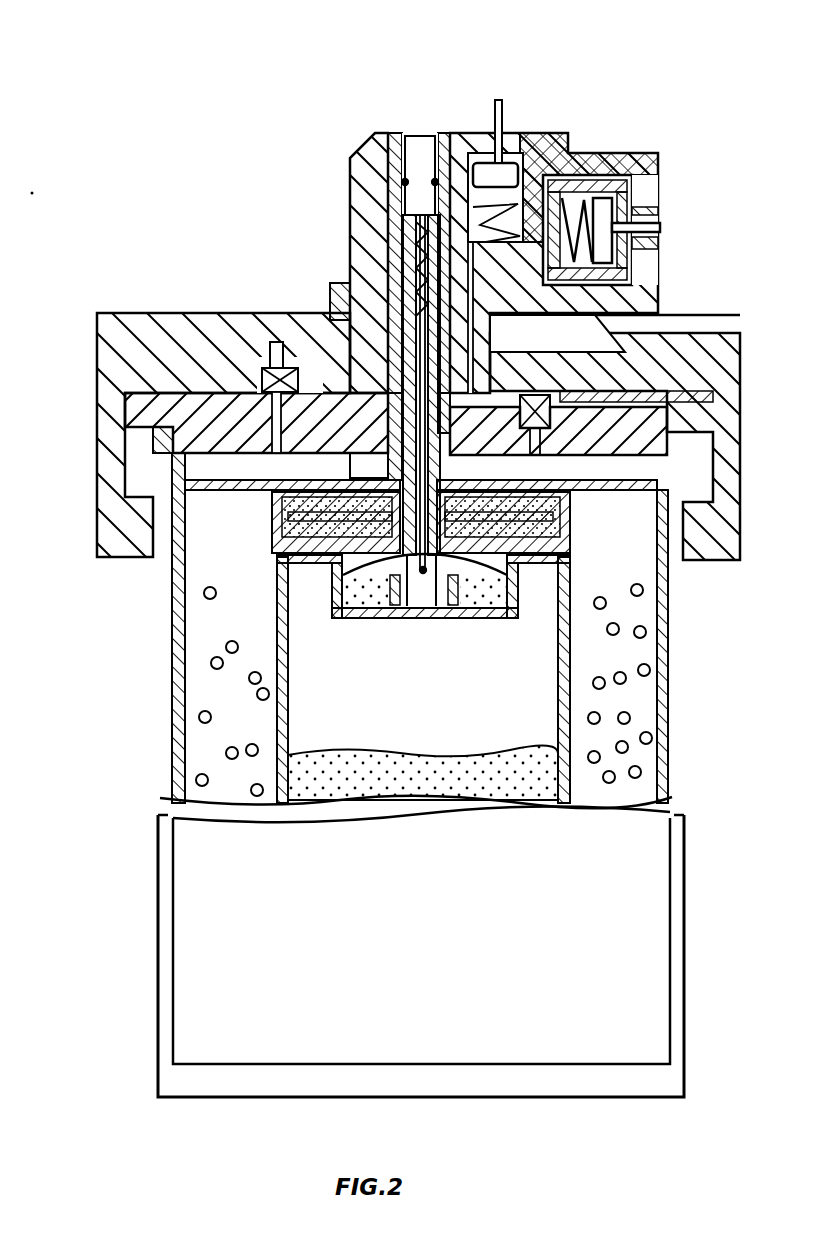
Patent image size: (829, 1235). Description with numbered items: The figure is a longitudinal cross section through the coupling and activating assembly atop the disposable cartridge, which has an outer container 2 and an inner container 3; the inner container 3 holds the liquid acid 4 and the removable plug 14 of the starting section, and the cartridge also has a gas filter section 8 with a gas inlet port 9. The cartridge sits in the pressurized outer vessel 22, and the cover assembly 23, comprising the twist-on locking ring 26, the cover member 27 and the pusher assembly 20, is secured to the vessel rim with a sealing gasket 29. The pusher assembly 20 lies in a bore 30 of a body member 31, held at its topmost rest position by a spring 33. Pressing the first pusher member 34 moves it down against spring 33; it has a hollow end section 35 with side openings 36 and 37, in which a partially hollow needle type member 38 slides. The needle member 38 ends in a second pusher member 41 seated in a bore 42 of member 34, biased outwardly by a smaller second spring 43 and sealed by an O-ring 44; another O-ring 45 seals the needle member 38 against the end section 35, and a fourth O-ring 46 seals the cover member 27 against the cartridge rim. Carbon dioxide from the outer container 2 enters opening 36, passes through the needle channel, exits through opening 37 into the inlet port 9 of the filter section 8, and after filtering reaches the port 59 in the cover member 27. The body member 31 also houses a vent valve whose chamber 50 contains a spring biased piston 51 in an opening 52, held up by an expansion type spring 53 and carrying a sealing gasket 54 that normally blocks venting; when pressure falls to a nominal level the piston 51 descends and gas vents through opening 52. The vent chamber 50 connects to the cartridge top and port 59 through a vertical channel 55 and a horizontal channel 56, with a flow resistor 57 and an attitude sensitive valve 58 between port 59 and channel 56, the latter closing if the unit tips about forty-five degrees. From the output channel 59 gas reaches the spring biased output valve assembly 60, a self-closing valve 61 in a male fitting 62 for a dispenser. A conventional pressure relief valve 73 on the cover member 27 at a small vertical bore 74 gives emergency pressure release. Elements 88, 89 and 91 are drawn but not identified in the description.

The outer container 2 is at (640, 712).
The inner container 3 is at (283, 697).
The liquid acid 4 is at (445, 752).
The gas filter section 8 is at (424, 573).
The gas inlet port 9 is at (380, 500).
The removable plug 14 is at (372, 612).
The pusher assembly 20 is at (424, 115).
The pressurized outer vessel 22 is at (686, 940).
The cover assembly 23 is at (183, 285).
The twist-on locking ring 26 is at (730, 435).
The cover member 27 is at (190, 418).
The sealing gasket 29 is at (158, 328).
The bore 30 is at (470, 480).
The body member 31 is at (350, 298).
The spring 33 is at (275, 492).
The first pusher member 34 is at (372, 165).
The hollow end section 35 is at (520, 590).
The side opening 36 is at (414, 612).
The side opening 37 is at (280, 590).
The needle type member 38 is at (470, 600).
The second pusher member 41 is at (392, 167).
The bore 42 is at (405, 300).
The second spring 43 is at (403, 240).
The O-ring 44 is at (462, 133).
The O-ring 45 is at (340, 600).
The fourth O-ring 46 is at (345, 520).
The vent valve chamber 50 is at (602, 160).
The piston 51 is at (520, 180).
The opening 52 is at (515, 166).
The expansion type spring 53 is at (590, 162).
The sealing gasket 54 is at (512, 215).
The vertical channel 55 is at (473, 347).
The horizontal channel 56 is at (505, 393).
The flow resistor 57 is at (560, 427).
The attitude sensitive valve 58 is at (560, 457).
The port 59 is at (533, 227).
The output valve assembly 60 is at (630, 188).
The self-closing spring biased valve 61 is at (598, 225).
The male fitting 62 is at (648, 298).
The pressure relief valve 73 is at (268, 360).
The small vertical bore 74 is at (172, 458).
The tube top 88 is at (390, 135).
The plug 89 is at (407, 133).
The valve stem 91 is at (499, 100).